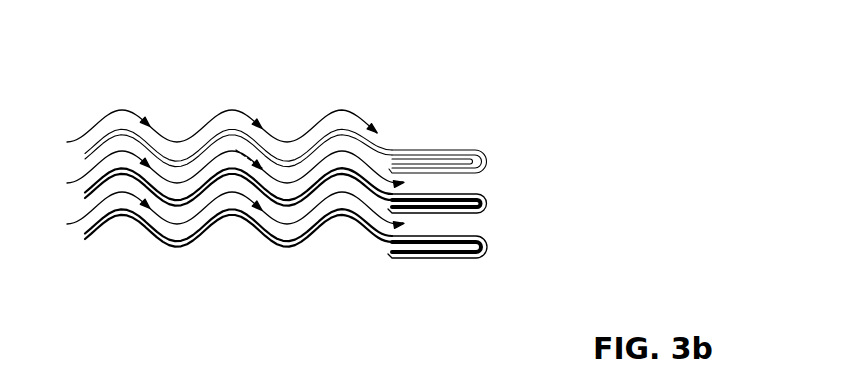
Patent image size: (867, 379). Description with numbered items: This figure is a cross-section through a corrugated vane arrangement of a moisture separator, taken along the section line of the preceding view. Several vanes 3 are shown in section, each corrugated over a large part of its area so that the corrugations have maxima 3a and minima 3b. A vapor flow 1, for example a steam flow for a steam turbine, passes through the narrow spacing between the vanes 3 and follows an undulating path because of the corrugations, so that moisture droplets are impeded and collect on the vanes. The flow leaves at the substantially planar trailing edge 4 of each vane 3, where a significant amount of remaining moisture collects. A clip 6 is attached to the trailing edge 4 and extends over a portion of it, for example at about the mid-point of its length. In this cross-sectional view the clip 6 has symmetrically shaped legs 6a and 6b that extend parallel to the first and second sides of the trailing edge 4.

The vapor flow 1 is at (258, 125).
The vane 3 is at (214, 89).
The maxima of the corrugations 3a is at (230, 228).
The minima of the corrugations 3b is at (285, 254).
The trailing edge 4 is at (502, 154).
The clip 6 is at (490, 204).
The first leg of the clip 6a is at (431, 143).
The second leg of the clip 6b is at (427, 264).